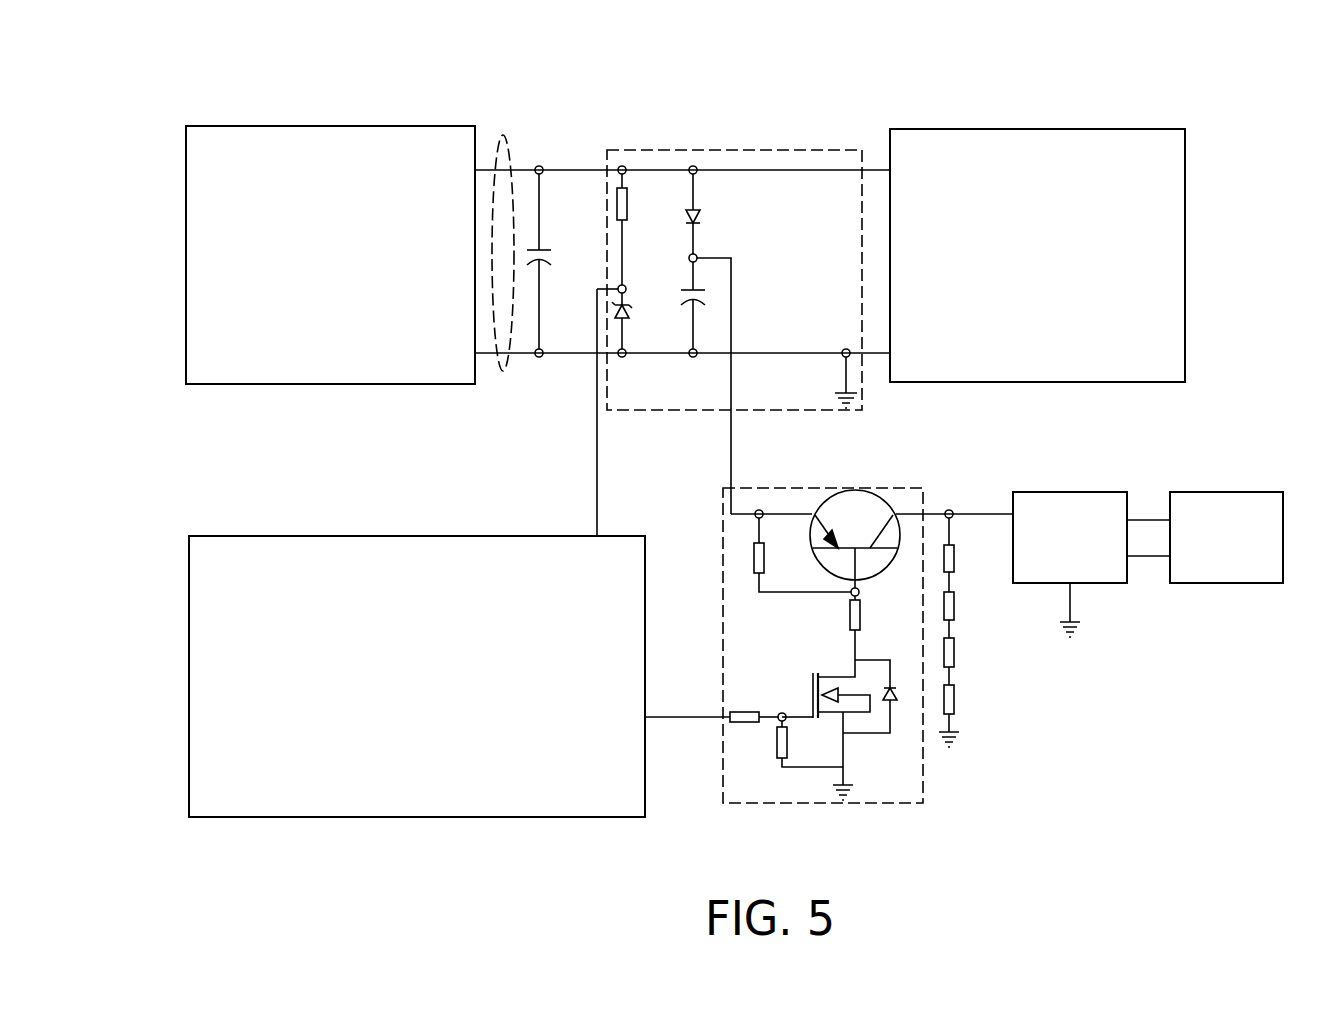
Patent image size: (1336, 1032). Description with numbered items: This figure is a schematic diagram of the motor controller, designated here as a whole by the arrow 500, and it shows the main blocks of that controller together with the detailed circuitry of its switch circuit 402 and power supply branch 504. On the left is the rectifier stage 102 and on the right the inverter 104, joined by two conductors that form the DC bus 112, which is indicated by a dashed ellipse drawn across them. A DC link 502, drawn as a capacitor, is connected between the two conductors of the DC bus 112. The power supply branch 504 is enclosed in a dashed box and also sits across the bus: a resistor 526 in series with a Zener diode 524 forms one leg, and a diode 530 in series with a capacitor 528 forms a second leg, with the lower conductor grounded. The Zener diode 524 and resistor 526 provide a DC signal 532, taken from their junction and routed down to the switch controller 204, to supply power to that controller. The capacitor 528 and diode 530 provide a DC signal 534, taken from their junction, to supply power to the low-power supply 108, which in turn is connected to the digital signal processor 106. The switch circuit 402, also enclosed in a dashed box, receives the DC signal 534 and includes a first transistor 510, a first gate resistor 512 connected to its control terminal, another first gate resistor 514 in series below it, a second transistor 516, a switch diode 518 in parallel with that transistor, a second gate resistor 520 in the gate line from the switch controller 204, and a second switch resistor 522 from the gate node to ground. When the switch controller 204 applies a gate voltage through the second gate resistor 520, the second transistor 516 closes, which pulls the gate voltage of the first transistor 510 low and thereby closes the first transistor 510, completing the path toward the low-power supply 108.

The circuit system 500 is at (1112, 82).
The rectifier stage 102 is at (330, 255).
The inverter 104 is at (1037, 255).
The digital signal processor 106 is at (1226, 537).
The low-power supply 108 is at (1070, 564).
The DC bus 112 is at (498, 135).
The switch controller 204 is at (417, 676).
The switch circuit 402 is at (810, 488).
The DC link 502 is at (547, 248).
The power supply branch 504 is at (700, 150).
The first transistor 510 is at (885, 498).
The first gate resistor 512 is at (753, 562).
The first gate resistor 514 is at (848, 613).
The second transistor 516 is at (828, 675).
The switch diode 518 is at (895, 702).
The second gate resistor 520 is at (740, 712).
The second switch resistor 522 is at (775, 740).
The Zener diode 524 is at (632, 307).
The resistor 526 is at (628, 204).
The capacitor 528 is at (687, 288).
The diode 530 is at (700, 210).
The DC signal 532 is at (596, 493).
The DC signal 534 is at (731, 323).